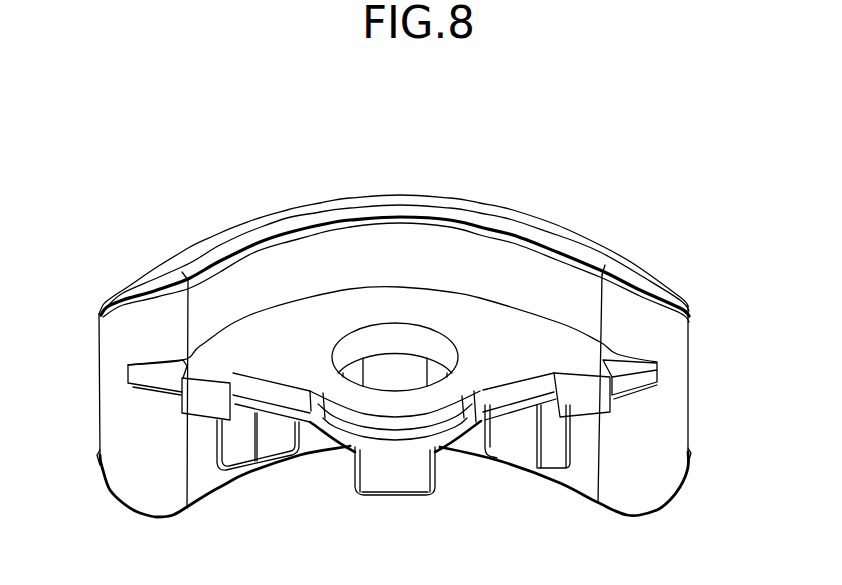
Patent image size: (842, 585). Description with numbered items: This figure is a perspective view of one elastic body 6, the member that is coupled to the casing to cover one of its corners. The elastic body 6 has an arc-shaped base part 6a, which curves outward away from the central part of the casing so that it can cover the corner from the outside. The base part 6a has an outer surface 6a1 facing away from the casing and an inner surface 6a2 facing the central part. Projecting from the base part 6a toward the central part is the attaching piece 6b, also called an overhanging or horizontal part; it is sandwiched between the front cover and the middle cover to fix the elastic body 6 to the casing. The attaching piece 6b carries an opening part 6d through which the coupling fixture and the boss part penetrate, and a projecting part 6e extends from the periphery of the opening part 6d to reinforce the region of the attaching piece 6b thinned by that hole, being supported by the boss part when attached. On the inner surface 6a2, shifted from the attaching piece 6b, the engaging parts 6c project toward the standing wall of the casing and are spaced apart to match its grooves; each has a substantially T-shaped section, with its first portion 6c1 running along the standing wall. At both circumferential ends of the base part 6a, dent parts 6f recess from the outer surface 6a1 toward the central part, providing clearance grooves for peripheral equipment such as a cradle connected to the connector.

The elastic body 6 is at (470, 131).
The base part 6a is at (524, 221).
The outer surface 6a1 is at (347, 200).
The inner surface 6a2 is at (250, 277).
The attaching piece 6b is at (544, 347).
The engaging part 6c is at (392, 400).
The first portion 6c1 is at (277, 442).
The opening part 6d is at (403, 340).
The projecting part 6e is at (398, 473).
The dent part 6f is at (99, 392).